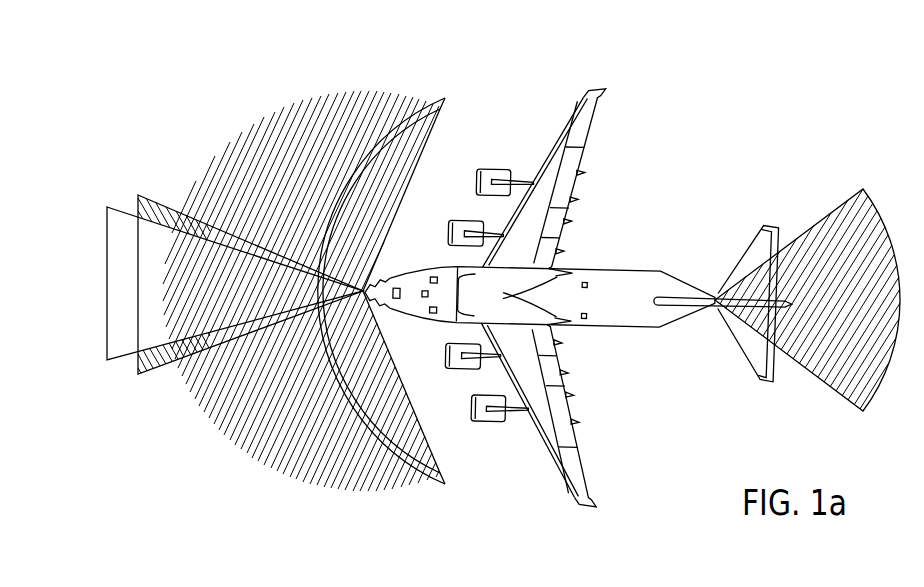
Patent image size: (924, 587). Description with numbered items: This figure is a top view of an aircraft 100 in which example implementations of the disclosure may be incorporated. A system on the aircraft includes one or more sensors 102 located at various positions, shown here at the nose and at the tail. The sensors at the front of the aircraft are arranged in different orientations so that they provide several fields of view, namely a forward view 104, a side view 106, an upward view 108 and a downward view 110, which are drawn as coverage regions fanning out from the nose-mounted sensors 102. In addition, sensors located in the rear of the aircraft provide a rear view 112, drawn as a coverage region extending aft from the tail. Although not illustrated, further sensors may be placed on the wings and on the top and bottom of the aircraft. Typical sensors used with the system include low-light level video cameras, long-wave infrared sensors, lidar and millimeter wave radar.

The aircraft 100 is at (584, 66).
The sensors 102 is at (372, 280).
The forward view 104 is at (153, 195).
The side view 106 is at (312, 93).
The upward view 108 is at (392, 105).
The downward view 110 is at (109, 205).
The rear view 112 is at (830, 218).